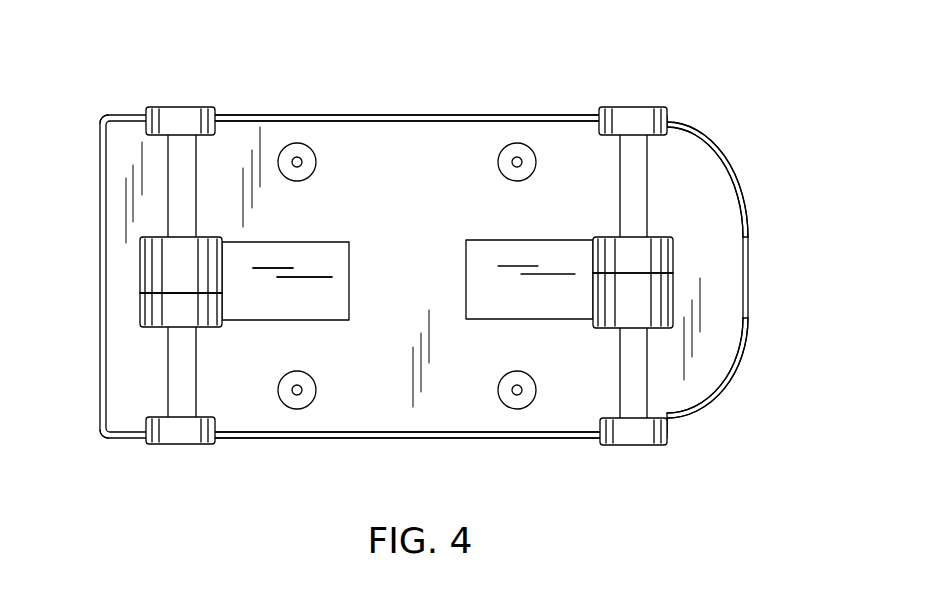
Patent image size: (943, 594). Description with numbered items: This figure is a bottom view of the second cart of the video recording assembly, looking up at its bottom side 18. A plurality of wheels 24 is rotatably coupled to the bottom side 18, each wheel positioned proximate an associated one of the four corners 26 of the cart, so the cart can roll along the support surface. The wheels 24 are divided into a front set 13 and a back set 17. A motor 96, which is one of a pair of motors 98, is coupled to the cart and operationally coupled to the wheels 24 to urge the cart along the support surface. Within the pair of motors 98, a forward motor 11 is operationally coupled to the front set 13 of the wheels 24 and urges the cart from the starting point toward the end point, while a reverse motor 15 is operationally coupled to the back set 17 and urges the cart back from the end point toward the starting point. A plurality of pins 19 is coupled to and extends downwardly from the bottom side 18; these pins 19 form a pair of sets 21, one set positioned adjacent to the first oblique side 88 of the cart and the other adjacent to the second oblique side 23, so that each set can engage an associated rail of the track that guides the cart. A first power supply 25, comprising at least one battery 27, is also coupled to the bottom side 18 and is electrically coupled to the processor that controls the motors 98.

The forward motor 11 is at (673, 265).
The front set of wheels 13 is at (687, 160).
The reverse motor 15 is at (140, 327).
The back set of wheels 17 is at (165, 107).
The bottom side 18 is at (413, 132).
The pins 19 is at (297, 143).
The sets of pins 21 is at (490, 160).
The second oblique side 23 is at (560, 438).
The wheels 24 is at (186, 107).
The first power supply 25 is at (267, 242).
The corners 26 is at (108, 116).
The battery 27 is at (289, 242).
The first oblique side 88 is at (540, 115).
The motor 96 is at (140, 308).
The pair of motors 98 is at (673, 298).